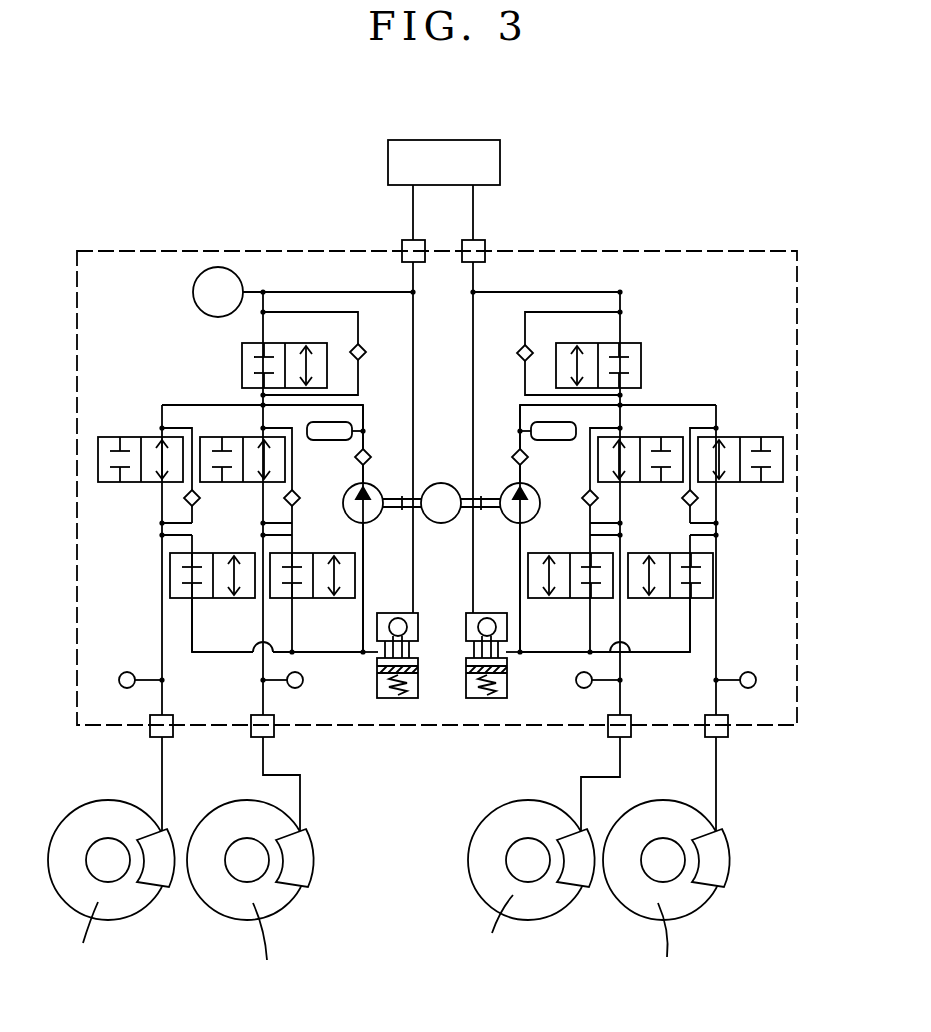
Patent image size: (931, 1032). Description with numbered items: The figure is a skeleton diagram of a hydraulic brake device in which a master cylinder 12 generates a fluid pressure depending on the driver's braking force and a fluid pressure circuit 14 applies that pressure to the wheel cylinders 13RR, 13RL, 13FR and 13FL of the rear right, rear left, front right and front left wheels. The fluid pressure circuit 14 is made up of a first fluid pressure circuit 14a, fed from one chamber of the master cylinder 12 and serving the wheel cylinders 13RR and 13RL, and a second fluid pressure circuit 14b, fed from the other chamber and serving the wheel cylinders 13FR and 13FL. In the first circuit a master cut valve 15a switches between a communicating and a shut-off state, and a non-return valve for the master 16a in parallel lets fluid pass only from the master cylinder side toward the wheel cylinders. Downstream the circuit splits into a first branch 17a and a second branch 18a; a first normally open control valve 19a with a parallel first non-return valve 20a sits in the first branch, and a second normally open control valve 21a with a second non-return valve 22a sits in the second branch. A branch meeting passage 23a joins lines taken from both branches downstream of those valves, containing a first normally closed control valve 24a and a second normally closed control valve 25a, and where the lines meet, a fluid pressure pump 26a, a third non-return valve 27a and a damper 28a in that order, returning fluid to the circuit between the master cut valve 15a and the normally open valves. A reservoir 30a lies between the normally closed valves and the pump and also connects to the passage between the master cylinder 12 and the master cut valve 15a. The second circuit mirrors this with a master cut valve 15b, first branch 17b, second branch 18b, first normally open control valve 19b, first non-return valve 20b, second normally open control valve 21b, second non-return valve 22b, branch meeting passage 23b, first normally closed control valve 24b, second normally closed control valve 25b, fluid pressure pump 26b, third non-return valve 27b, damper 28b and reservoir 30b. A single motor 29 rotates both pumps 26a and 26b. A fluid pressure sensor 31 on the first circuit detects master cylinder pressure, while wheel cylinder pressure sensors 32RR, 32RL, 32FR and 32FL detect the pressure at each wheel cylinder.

The master cylinder 12 is at (388, 165).
The fluid pressure circuit 14 is at (112, 249).
The first fluid pressure circuit 14a is at (413, 223).
The second fluid pressure circuit 14b is at (473, 223).
The master cut valve 15a is at (242, 362).
The master cut valve 15b is at (642, 362).
The non-return valve for the master 16a is at (360, 346).
The first branch 17a is at (170, 405).
The first branch 17b is at (622, 418).
The second branch 18a is at (262, 418).
The second branch 18b is at (710, 405).
The first normally open control valve 19a is at (128, 482).
The first normally open control valve 19b is at (523, 346).
The first non-return valve 20a is at (198, 503).
The first non-return valve 20b is at (585, 503).
The second normally open control valve 21a is at (287, 460).
The second normally open control valve 21b is at (755, 482).
The second non-return valve 22a is at (298, 503).
The second non-return valve 22b is at (686, 503).
The branch meeting passage 23a is at (222, 652).
The branch meeting passage 23b is at (660, 652).
The first normally closed control valve 24a is at (197, 598).
The first normally closed control valve 24b is at (586, 598).
The second normally closed control valve 25a is at (297, 598).
The second normally closed control valve 25b is at (686, 598).
The fluid pressure pump 26a is at (370, 518).
The fluid pressure pump 26b is at (513, 518).
The third non-return valve 27a is at (366, 450).
The third non-return valve 27b is at (518, 450).
The damper 28a is at (335, 421).
The damper 28b is at (548, 421).
The motor 29 is at (441, 483).
The reservoir 30a is at (377, 688).
The reservoir 30b is at (507, 688).
The fluid pressure sensor 31 is at (193, 292).
The wheel cylinder pressure sensor 32RR is at (125, 689).
The wheel cylinder pressure sensor 32RL is at (296, 689).
The wheel cylinder pressure sensor 32FR is at (584, 689).
The wheel cylinder pressure sensor 32FL is at (748, 689).
The wheel cylinder 13RR is at (158, 882).
The wheel cylinder 13RL is at (303, 873).
The wheel cylinder 13FR is at (583, 890).
The wheel cylinder 13FL is at (715, 882).